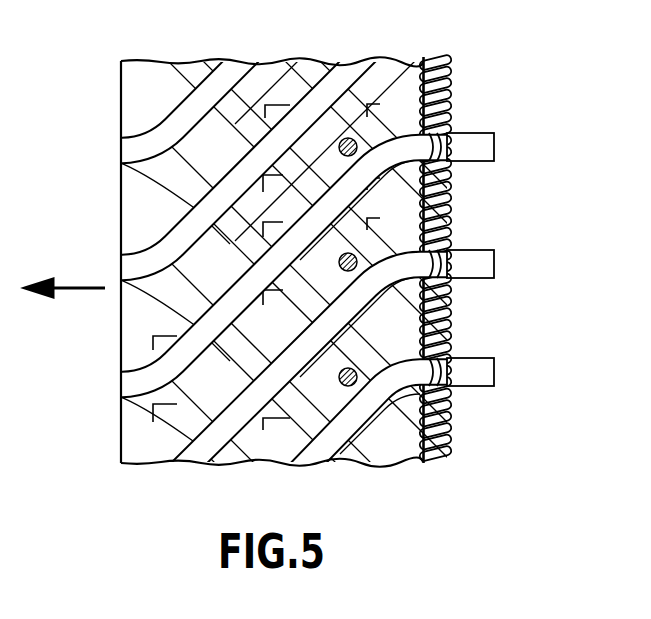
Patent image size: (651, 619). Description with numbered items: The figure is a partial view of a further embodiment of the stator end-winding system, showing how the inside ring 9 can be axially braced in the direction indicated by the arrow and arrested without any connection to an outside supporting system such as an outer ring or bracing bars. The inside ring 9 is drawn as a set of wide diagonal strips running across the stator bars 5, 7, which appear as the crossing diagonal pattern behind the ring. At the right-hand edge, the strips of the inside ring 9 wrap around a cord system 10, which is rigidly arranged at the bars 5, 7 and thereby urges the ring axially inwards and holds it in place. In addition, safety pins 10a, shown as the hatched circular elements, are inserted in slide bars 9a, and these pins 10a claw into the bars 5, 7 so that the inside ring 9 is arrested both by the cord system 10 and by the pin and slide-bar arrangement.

The bar 5 is at (305, 247).
The bar 7 is at (305, 301).
The inside ring 9 is at (217, 157).
The slide bars 9a is at (447, 298).
The cord system 10 is at (447, 325).
The safety pins 10a is at (352, 138).